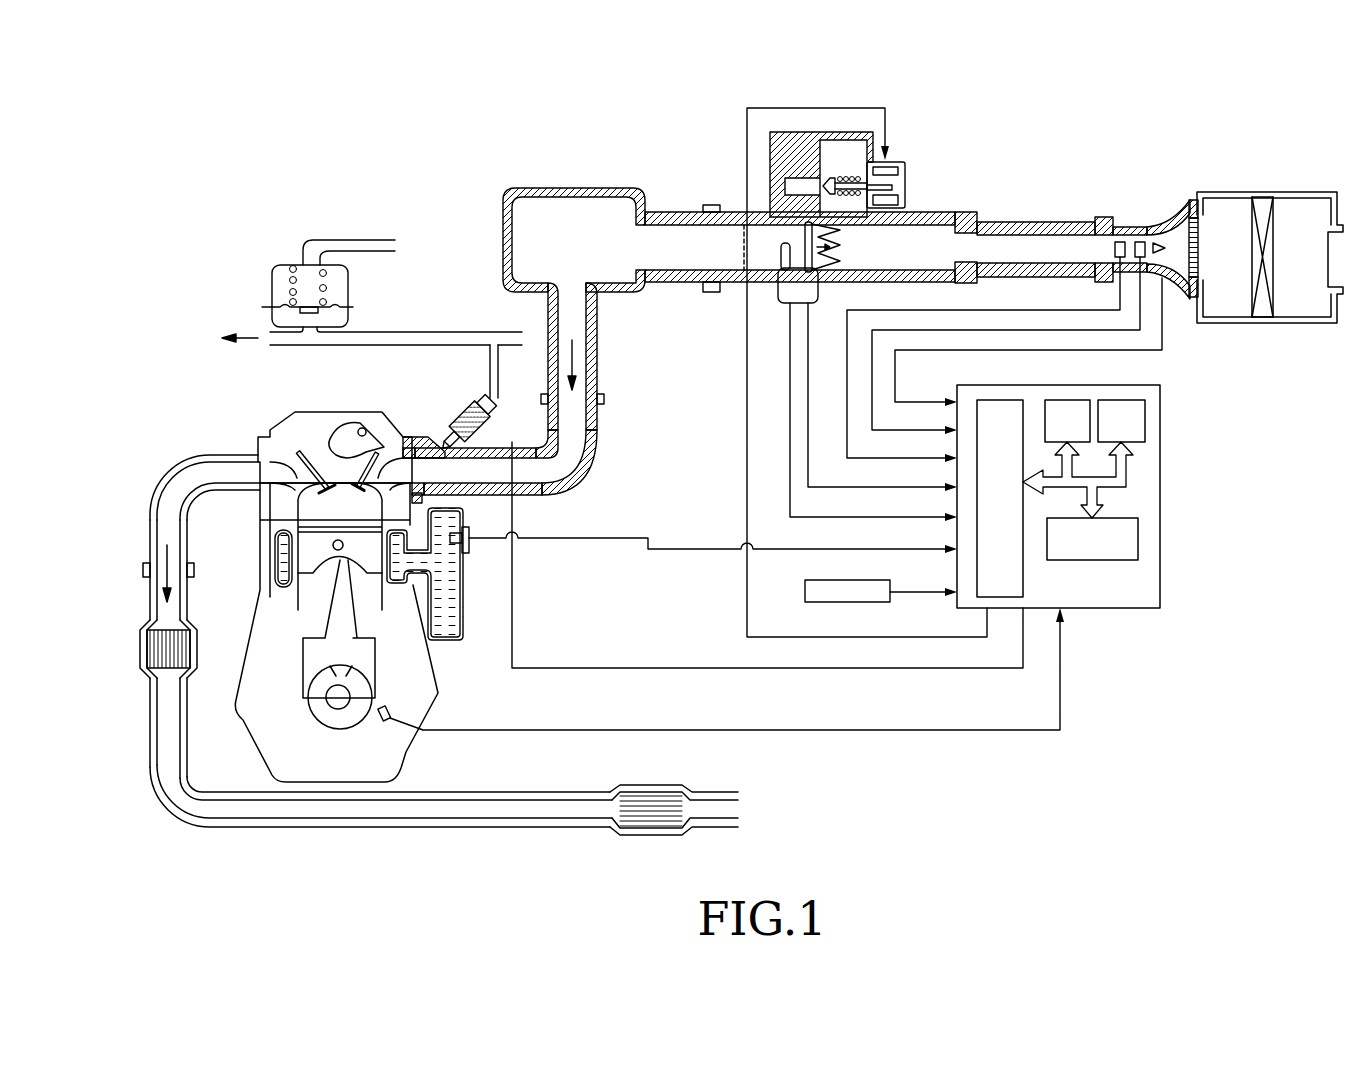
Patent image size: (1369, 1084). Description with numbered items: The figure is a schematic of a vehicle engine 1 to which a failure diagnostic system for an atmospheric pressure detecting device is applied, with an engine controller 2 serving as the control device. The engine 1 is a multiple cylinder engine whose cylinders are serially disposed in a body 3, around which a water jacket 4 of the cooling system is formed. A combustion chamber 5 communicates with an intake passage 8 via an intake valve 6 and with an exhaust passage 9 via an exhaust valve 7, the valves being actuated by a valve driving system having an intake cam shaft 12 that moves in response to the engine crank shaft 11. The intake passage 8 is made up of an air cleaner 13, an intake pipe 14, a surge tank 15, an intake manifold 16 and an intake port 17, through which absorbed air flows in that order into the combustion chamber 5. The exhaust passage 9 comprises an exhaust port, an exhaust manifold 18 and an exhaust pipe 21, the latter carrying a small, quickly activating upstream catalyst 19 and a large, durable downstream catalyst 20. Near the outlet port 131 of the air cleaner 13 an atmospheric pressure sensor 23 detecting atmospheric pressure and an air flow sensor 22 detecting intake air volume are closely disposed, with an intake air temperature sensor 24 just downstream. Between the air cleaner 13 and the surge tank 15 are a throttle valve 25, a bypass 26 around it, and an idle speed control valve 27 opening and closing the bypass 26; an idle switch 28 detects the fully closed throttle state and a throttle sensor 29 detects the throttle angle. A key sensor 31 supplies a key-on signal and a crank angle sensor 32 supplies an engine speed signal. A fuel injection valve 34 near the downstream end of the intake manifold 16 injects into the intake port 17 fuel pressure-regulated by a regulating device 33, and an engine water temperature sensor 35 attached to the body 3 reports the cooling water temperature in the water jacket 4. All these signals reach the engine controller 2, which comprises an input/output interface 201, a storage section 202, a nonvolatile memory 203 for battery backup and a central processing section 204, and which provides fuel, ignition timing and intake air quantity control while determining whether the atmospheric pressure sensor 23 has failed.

The engine 1 is at (208, 425).
The engine controller 2 is at (1083, 498).
The body 3 is at (262, 605).
The water jacket 4 is at (394, 574).
The combustion chamber 5 is at (315, 510).
The intake valve 6 is at (388, 470).
The exhaust valve 7 is at (296, 452).
The intake passage 8 is at (572, 345).
The exhaust passage 9 is at (165, 554).
The engine crank shaft 11 is at (337, 700).
The intake cam shaft 12 is at (340, 443).
The air cleaner 13 is at (1303, 198).
The outlet port 131 is at (1215, 238).
The intake pipe 14 is at (996, 215).
The surge tank 15 is at (568, 207).
The intake manifold 16 is at (562, 484).
The intake port 17 is at (417, 473).
The exhaust manifold 18 is at (178, 470).
The upstream catalyst 19 is at (148, 645).
The downstream catalyst 20 is at (644, 796).
The exhaust pipe 21 is at (516, 795).
The air flow sensor 22 is at (1158, 242).
The atmospheric pressure sensor 23 is at (1142, 242).
The intake air temperature sensor 24 is at (1121, 242).
The throttle valve 25 is at (805, 232).
The bypass 26 is at (841, 150).
The idle speed control valve 27 is at (894, 190).
The idle switch 28 is at (782, 290).
The throttle sensor 29 is at (846, 243).
The key sensor 31 is at (825, 602).
The crank angle sensor 32 is at (388, 710).
The regulating device 33 is at (348, 284).
The fuel injection valve 34 is at (449, 418).
The engine water temperature sensor 35 is at (472, 544).
The input/output interface 201 is at (1003, 400).
The storage section 202 is at (1082, 400).
The nonvolatile memory 203 is at (1146, 424).
The central processing section 204 is at (1140, 538).